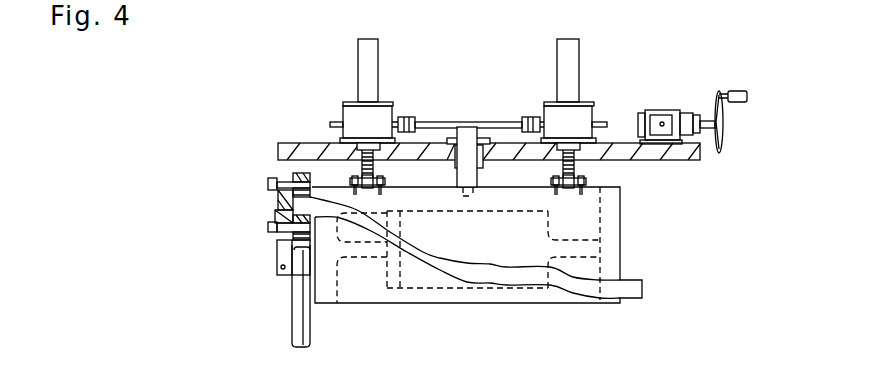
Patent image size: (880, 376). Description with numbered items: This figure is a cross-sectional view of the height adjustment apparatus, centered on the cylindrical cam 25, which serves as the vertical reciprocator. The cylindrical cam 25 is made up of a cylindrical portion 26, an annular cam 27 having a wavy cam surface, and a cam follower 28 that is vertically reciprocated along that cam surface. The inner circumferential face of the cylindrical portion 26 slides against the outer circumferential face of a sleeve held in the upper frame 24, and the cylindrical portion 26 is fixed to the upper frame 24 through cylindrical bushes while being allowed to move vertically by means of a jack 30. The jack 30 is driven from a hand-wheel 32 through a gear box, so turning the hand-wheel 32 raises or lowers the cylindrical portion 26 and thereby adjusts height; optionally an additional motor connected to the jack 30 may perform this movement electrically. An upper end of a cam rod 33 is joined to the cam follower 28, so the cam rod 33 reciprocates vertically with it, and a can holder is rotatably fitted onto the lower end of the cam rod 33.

The upper frame 24 is at (290, 152).
The cylindrical cam 25 is at (690, 220).
The cylindrical portion 26 is at (612, 250).
The annular cam 27 is at (298, 203).
The cam follower 28 is at (280, 256).
The jack 30 is at (353, 112).
The hand-wheel 32 is at (723, 124).
The cam rod 33 is at (292, 319).